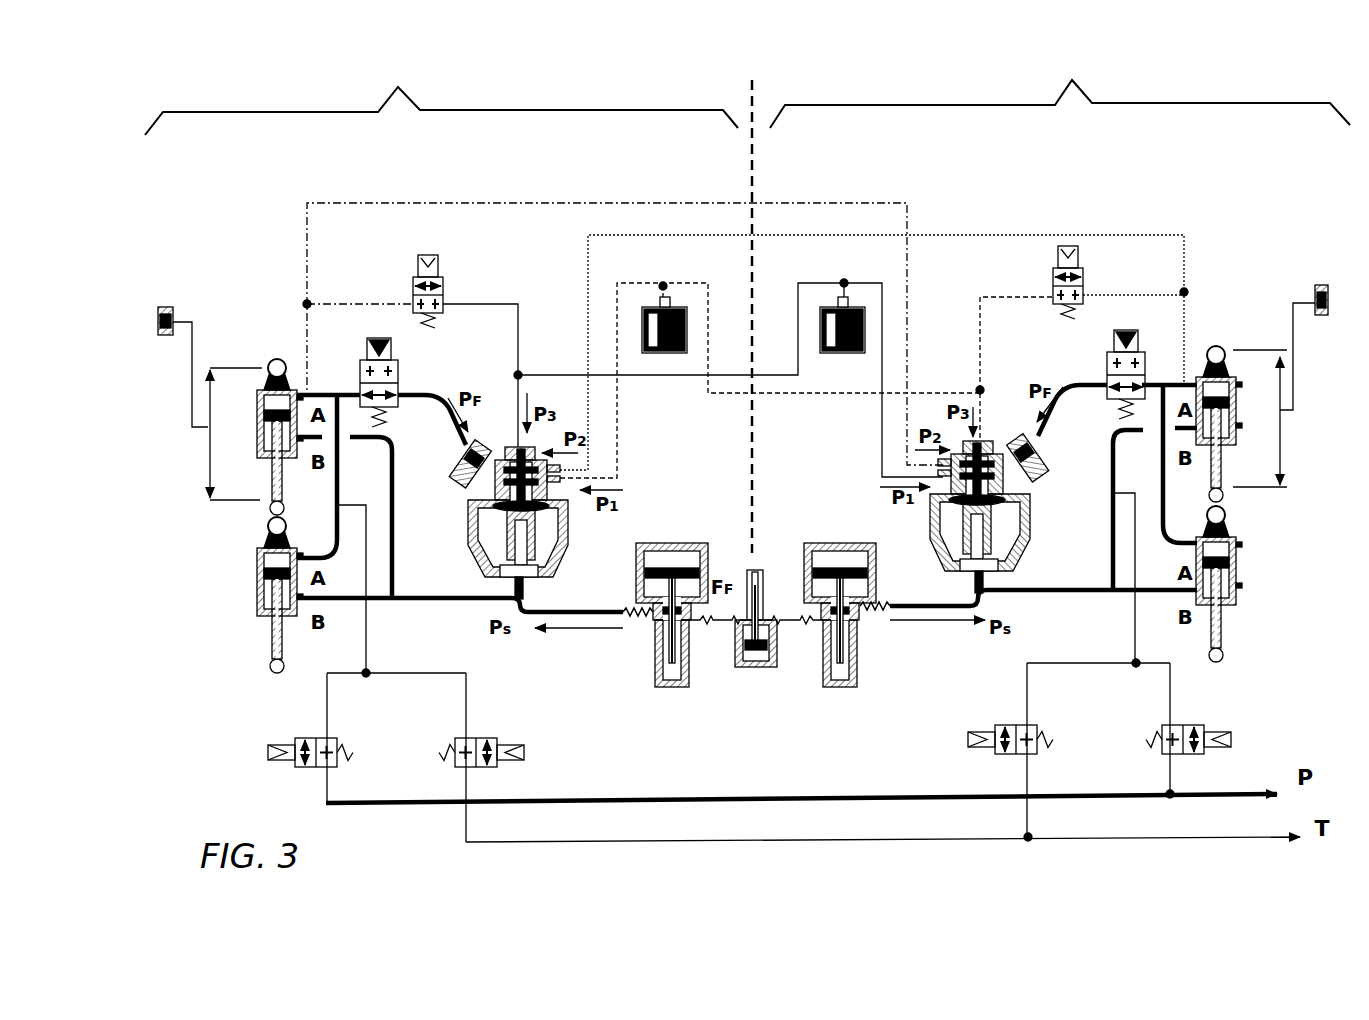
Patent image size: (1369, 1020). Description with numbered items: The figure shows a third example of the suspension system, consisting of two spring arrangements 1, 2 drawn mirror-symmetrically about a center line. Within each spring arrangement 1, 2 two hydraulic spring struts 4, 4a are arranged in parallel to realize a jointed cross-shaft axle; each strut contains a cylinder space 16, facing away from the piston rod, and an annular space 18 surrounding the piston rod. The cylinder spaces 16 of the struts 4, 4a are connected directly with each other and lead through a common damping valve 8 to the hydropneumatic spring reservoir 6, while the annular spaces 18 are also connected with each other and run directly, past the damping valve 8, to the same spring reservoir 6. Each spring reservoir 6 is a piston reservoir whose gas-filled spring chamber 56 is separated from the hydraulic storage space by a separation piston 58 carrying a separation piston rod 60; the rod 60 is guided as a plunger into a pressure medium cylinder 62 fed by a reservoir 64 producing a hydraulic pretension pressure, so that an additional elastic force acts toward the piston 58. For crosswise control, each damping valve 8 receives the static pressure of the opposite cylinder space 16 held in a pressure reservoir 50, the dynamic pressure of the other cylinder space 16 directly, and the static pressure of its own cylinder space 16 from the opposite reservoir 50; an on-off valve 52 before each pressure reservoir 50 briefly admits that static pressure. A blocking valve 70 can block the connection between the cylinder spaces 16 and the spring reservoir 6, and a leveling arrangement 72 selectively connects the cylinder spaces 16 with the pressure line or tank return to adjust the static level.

The spring arrangement 1 is at (441, 91).
The spring arrangement 2 is at (1060, 83).
The hydraulic spring strut 4 is at (275, 355).
The hydraulic spring strut 4a is at (262, 532).
The hydropneumatic spring reservoir 6 is at (648, 545).
The damping valve 8 is at (465, 560).
The cylinder space 16 is at (272, 406).
The annular space 18 is at (270, 440).
The pressure reservoir 50 is at (645, 308).
The on-off valve 52 is at (428, 245).
The spring chamber 56 is at (678, 553).
The separation piston 58 is at (650, 571).
The separation piston rod 60 is at (660, 637).
The pressure medium cylinder 62 is at (668, 690).
The reservoir 64 is at (767, 672).
The blocking valve 70 is at (370, 327).
The leveling arrangement 72 is at (453, 735).